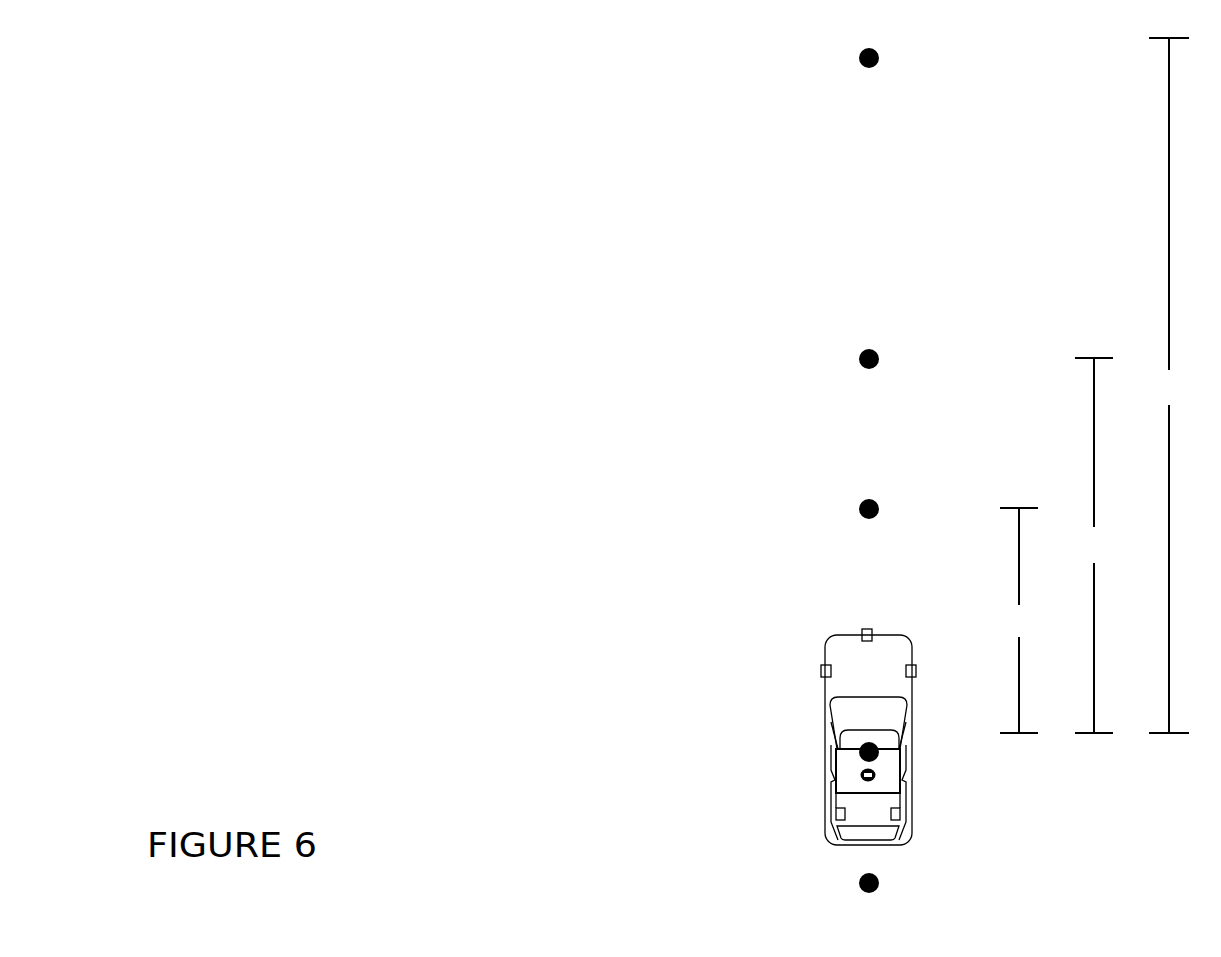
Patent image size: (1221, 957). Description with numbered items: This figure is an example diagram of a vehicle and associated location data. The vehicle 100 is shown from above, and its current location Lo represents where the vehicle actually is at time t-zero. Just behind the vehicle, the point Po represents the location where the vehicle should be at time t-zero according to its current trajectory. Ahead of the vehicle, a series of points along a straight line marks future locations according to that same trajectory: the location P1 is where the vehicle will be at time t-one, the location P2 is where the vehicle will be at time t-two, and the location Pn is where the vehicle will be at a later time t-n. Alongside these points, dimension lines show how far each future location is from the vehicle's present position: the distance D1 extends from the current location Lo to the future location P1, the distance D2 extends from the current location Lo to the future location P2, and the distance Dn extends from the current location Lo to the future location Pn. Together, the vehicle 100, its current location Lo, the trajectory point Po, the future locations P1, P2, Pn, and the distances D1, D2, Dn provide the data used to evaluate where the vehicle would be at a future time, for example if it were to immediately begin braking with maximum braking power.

The vehicle 100 is at (825, 722).
The future location at time tn Pn is at (858, 58).
The future location at time t2 P2 is at (858, 358).
The future location at time t1 P1 is at (858, 508).
The trajectory location at time t0 Po is at (857, 884).
The current location of the vehicle Lo is at (947, 732).
The distance to first future location D1 is at (1019, 620).
The distance to second future location D2 is at (1094, 545).
The distance to nth future location Dn is at (1169, 385).